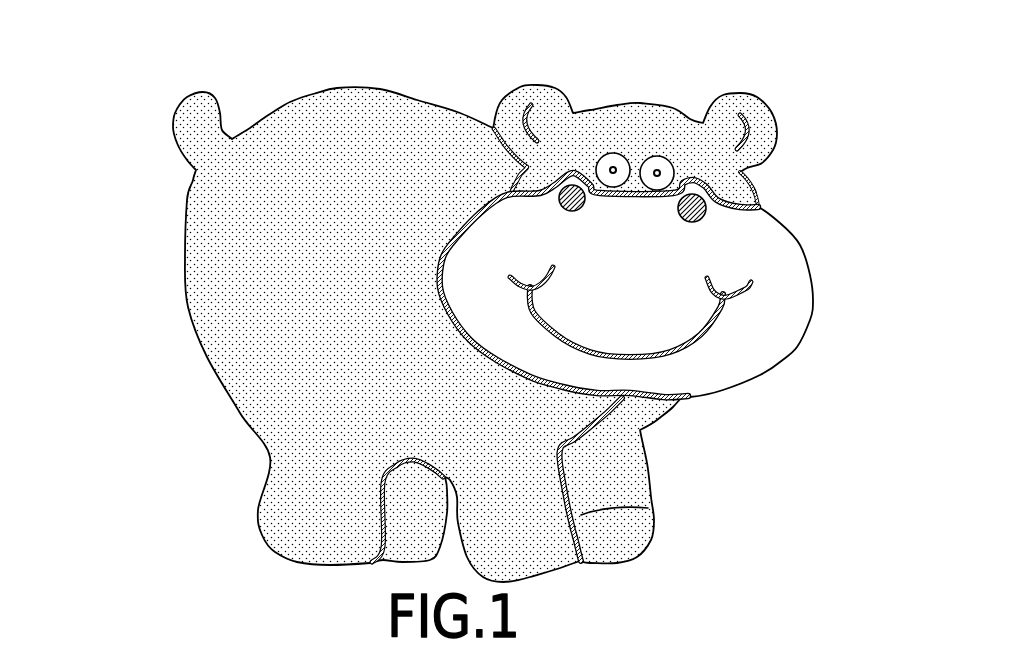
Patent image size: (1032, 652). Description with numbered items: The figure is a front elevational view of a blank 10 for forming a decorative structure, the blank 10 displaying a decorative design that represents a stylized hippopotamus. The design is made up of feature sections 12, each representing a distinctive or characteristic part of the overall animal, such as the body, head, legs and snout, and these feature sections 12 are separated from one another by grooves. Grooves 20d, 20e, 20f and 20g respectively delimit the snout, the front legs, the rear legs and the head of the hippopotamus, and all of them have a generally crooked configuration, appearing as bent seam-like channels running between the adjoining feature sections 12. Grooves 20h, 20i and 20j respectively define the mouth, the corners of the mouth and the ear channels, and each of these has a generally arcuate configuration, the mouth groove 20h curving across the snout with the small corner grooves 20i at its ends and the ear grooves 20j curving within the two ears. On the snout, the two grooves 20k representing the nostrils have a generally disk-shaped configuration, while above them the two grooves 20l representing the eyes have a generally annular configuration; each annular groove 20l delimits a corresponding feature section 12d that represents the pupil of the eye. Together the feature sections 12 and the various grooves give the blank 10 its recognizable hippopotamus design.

The blank 10 is at (135, 113).
The feature section 12 is at (257, 363).
The feature section representing the pupils 12d is at (656, 177).
The groove delimiting the snout 20d is at (657, 398).
The groove delimiting the front legs 20e is at (648, 508).
The groove delimiting the rear legs 20f is at (377, 523).
The groove delimiting the head 20g is at (493, 146).
The groove defining the mouth 20h is at (730, 290).
The groove defining the corners of the mouth 20i is at (730, 290).
The groove defining the ear channels 20j is at (525, 125).
The groove representing the nostrils 20k is at (687, 213).
The groove representing the eyes 20l is at (657, 157).